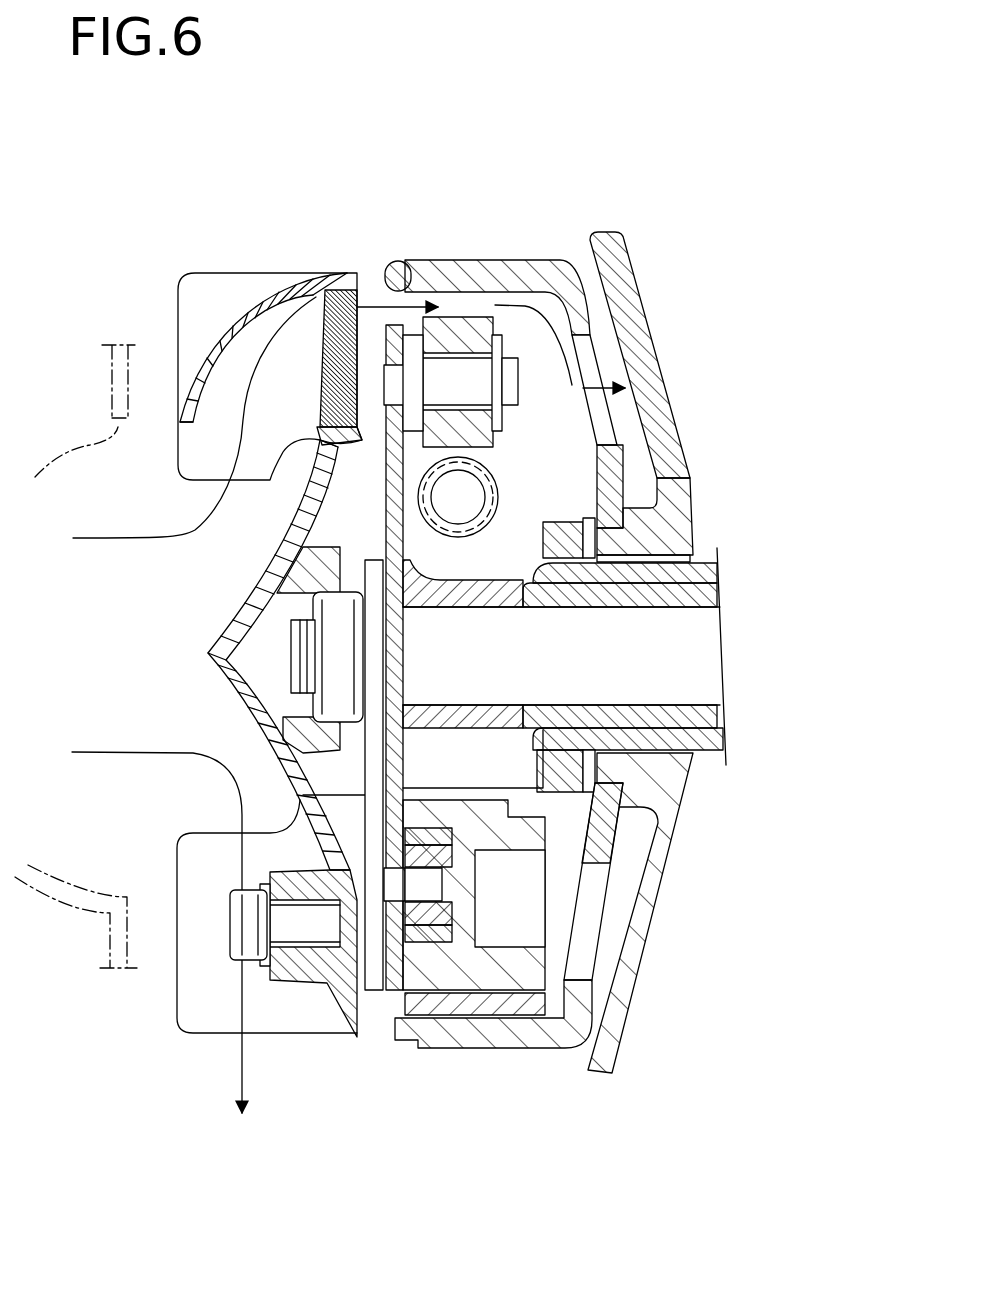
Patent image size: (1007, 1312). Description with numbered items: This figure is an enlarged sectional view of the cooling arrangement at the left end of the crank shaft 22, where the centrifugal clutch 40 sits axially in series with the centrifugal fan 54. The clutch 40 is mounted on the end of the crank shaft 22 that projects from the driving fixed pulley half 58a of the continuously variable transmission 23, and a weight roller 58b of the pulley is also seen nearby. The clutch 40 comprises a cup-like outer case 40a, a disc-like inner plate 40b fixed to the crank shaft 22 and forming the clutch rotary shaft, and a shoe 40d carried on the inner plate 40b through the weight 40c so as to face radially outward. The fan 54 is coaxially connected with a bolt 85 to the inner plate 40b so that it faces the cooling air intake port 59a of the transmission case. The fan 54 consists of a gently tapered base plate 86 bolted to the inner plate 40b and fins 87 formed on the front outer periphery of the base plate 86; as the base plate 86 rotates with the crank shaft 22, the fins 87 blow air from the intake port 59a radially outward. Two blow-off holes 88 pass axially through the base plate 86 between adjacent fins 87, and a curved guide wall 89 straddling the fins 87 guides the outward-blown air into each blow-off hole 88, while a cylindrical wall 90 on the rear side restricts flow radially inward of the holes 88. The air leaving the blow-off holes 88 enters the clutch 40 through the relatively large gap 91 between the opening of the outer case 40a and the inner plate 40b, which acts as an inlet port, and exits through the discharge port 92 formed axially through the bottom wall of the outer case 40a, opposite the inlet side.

The crank shaft 22 is at (693, 673).
The continuously variable transmission 23 is at (605, 1077).
The centrifugal clutch 40 is at (515, 258).
The outer case 40a is at (578, 268).
The inner plate 40b is at (400, 372).
The weight 40c is at (427, 1047).
The shoe 40d is at (472, 1050).
The centrifugal fan 54 is at (215, 258).
The driving fixed pulley half 58a is at (645, 912).
The weight roller 58b is at (497, 477).
The cooling air intake port 59a is at (71, 656).
The bolt 85 is at (217, 942).
The base plate 86 is at (233, 705).
The fins 87 is at (278, 1040).
The blow-off holes 88 is at (293, 487).
The guide wall 89 is at (207, 340).
The cylindrical wall 90 is at (440, 432).
The gap 91 is at (352, 268).
The discharge port 92 is at (600, 342).